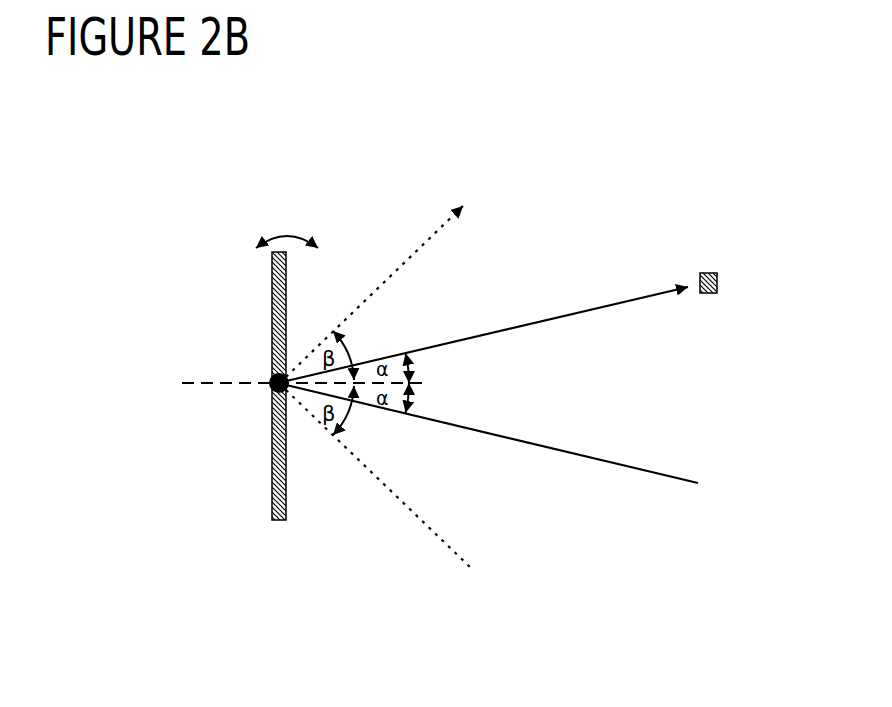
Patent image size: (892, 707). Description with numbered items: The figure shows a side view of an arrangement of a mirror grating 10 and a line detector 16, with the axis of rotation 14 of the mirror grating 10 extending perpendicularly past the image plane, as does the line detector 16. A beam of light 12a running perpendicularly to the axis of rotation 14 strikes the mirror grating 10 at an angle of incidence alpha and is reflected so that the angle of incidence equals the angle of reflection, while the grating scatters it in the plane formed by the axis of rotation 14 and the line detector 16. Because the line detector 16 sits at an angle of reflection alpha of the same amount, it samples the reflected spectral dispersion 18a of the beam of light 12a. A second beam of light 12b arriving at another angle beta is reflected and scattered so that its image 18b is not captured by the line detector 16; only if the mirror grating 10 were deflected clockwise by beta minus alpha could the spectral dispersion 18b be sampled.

The mirror grating 10 is at (286, 498).
The beam of light 12a is at (465, 428).
The beam of light 12b is at (462, 557).
The axis of rotation 14 is at (272, 388).
The line detector 16 is at (717, 283).
The spectral dispersion 18a is at (470, 332).
The spectral dispersion 18b is at (445, 228).